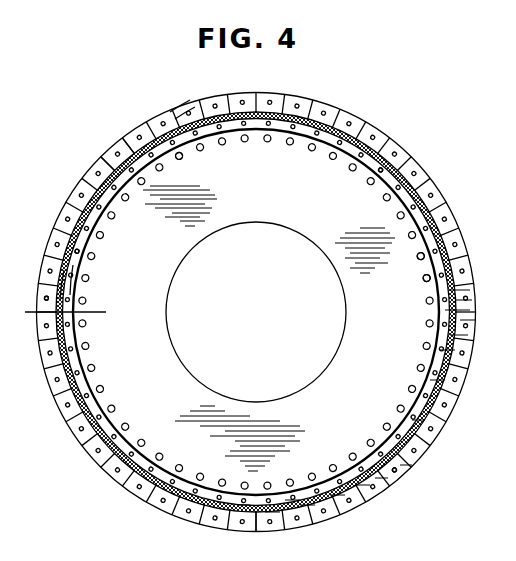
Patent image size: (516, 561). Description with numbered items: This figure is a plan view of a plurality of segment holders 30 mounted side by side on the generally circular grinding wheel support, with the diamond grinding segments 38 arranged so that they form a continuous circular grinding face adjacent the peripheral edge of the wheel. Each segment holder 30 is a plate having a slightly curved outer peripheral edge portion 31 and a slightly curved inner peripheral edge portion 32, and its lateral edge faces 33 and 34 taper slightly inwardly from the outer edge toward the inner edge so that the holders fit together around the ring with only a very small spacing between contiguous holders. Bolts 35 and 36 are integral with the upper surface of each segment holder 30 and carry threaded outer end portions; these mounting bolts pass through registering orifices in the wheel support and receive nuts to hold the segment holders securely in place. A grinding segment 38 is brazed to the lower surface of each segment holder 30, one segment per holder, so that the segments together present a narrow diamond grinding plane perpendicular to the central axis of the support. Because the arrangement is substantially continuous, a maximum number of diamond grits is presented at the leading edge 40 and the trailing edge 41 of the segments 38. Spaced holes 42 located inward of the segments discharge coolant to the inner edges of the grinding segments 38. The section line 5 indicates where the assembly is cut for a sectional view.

The section line 5- 5 is at (27, 315).
The segment holder 30 is at (133, 130).
The outer peripheral edge portion 31 is at (78, 186).
The inner peripheral edge portion 32 is at (113, 203).
The lateral edge face 33 is at (182, 114).
The lateral edge face 34 is at (170, 112).
The bolt 35 is at (70, 213).
The bolt 36 is at (86, 245).
The diamond grinding segment 38 is at (113, 160).
The leading edge 40 is at (65, 269).
The trailing edge 41 is at (73, 265).
The hole 42 is at (182, 157).